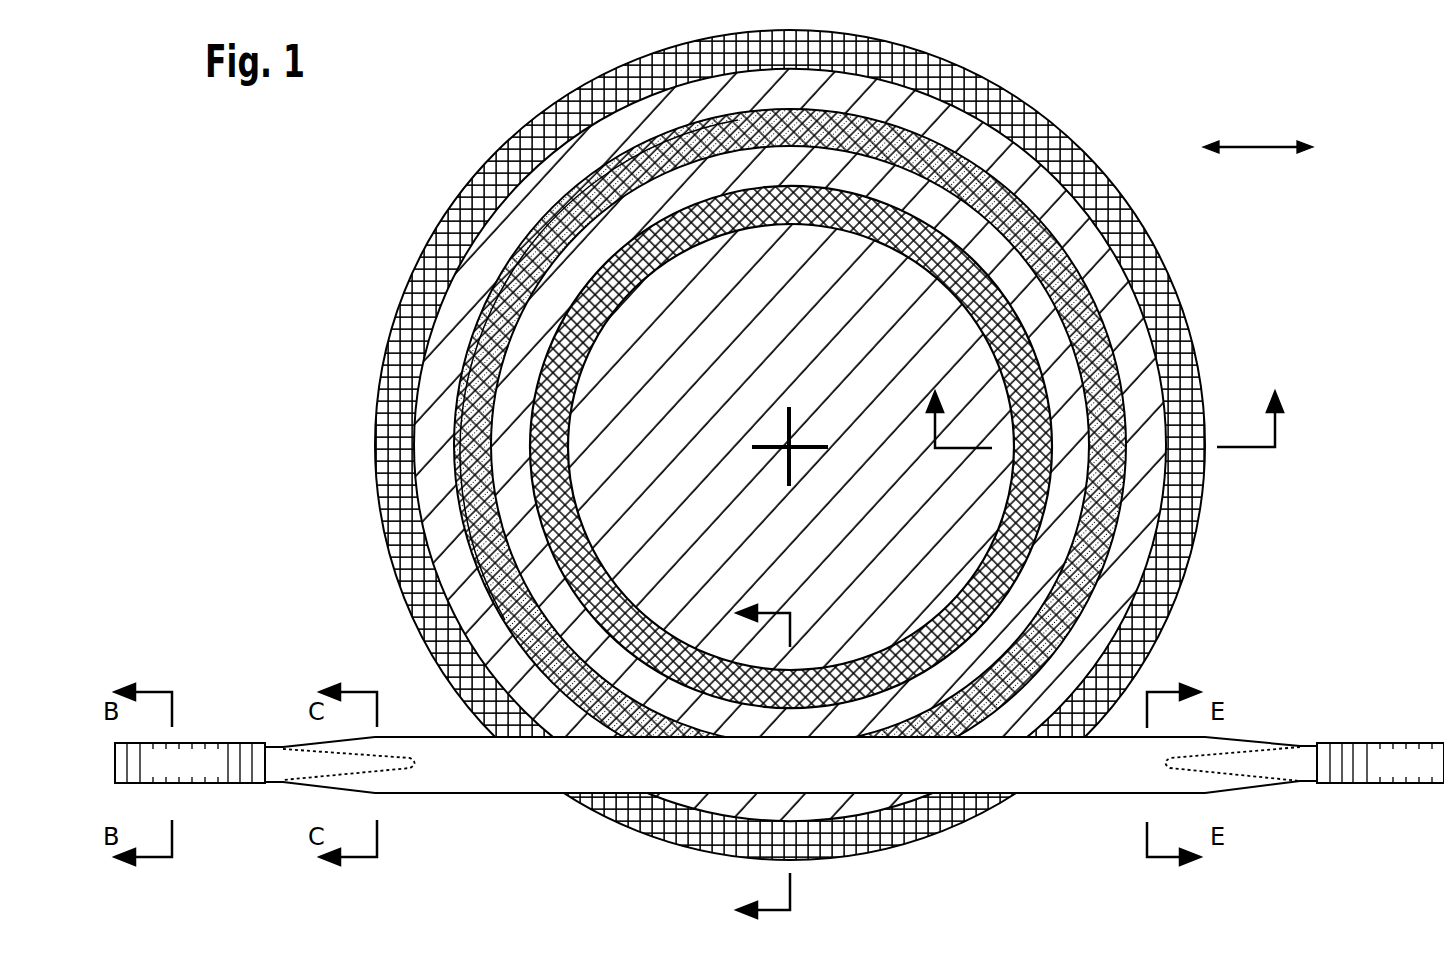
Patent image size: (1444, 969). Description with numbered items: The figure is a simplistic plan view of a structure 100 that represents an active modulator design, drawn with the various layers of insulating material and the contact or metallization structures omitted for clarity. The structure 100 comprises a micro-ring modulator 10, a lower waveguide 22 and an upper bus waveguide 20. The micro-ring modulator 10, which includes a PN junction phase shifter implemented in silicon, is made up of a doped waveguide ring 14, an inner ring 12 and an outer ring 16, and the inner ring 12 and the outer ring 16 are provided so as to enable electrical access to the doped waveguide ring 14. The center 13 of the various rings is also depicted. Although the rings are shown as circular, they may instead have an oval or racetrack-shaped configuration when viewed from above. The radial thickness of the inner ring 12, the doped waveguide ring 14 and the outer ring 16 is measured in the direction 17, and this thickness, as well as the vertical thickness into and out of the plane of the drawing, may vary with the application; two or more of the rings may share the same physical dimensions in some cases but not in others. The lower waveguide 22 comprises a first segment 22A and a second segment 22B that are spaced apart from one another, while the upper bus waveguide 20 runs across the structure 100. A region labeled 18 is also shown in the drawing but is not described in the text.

The structure 100 is at (450, 78).
The micro-ring modulator 10 is at (288, 212).
The inner ring 12 is at (592, 300).
The center 13 is at (786, 440).
The doped waveguide ring 14 is at (575, 220).
The outer ring 16 is at (512, 165).
The direction 17 is at (1258, 147).
The fill material 18 is at (470, 290).
The upper bus waveguide 20 is at (801, 776).
The lower waveguide 22 is at (779, 690).
The first segment 22A is at (197, 779).
The second segment 22B is at (1436, 779).